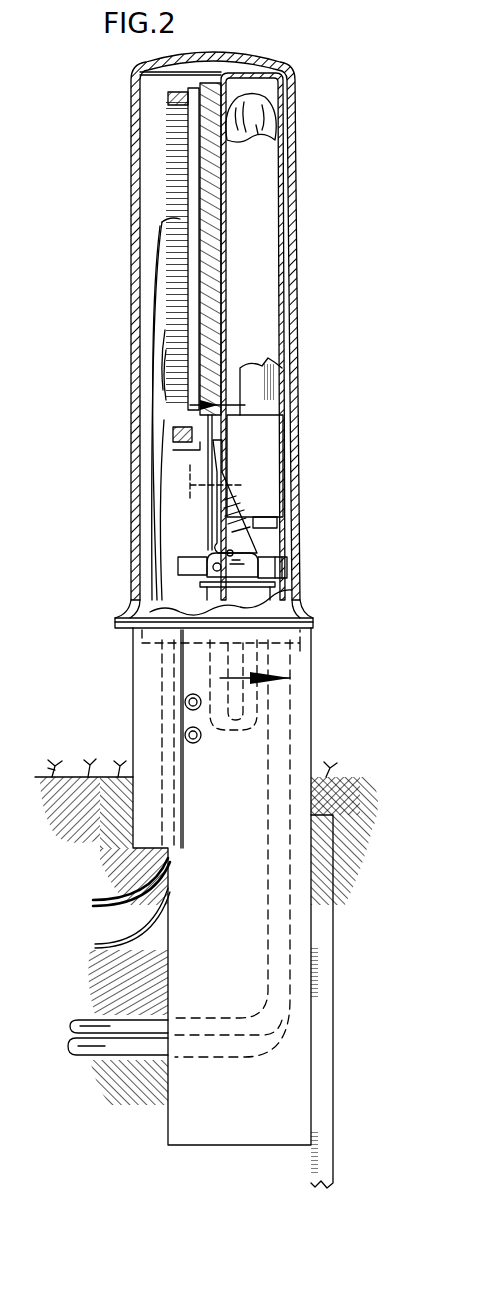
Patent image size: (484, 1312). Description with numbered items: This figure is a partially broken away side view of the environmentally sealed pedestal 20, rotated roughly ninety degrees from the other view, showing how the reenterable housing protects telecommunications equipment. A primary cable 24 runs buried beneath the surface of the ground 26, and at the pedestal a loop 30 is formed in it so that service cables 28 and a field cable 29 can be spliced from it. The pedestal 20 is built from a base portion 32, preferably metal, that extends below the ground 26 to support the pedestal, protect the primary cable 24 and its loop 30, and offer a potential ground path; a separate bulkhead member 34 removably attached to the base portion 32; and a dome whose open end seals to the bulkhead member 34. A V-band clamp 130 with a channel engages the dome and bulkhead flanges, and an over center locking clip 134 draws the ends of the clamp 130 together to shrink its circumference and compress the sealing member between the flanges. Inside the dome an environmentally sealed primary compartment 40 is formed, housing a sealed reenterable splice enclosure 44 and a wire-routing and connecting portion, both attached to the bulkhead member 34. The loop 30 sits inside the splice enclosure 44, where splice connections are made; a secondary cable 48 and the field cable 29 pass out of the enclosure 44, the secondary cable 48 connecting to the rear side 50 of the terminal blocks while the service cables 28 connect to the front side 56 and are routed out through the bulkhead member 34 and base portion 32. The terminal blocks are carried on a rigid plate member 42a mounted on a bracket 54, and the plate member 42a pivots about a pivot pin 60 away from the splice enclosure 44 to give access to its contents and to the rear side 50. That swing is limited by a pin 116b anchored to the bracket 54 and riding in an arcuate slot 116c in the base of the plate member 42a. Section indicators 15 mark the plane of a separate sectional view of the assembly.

The environmentally sealed pedestal 20 is at (118, 378).
The primary compartment 40 is at (154, 122).
The rear side of the connecting portion 50 is at (206, 105).
The front side of the terminal blocks 56 is at (152, 208).
The loop 30 is at (285, 107).
The sealed reenterable splice enclosure 44 is at (258, 192).
The section line 15 is at (240, 541).
The rigid plate member 42a is at (203, 463).
The bracket 54 is at (195, 517).
The pivot pin 60 is at (207, 556).
The pin 116b is at (238, 543).
The arcuate slot 116c is at (243, 556).
The over center locking clip 134 is at (115, 620).
The V-band clamp 130 is at (313, 617).
The bulkhead member 34 is at (305, 670).
The base portion 32 is at (305, 729).
The secondary cable 48 is at (235, 733).
The ground 26 is at (80, 775).
The service cables 28 is at (105, 897).
The field cable 29 is at (98, 945).
The primary cable 24 is at (83, 1063).